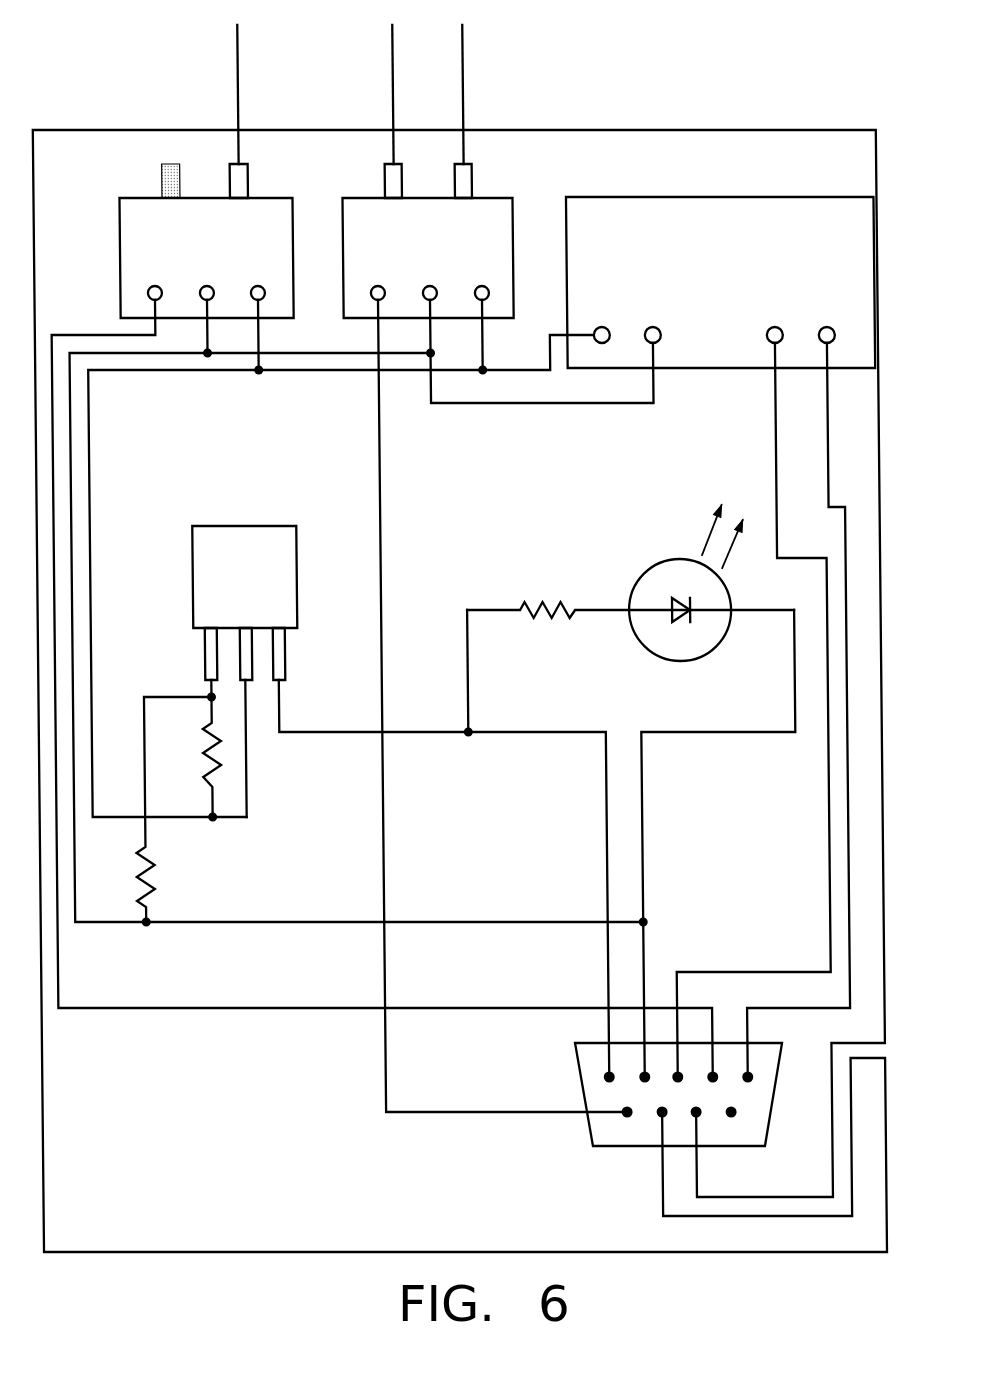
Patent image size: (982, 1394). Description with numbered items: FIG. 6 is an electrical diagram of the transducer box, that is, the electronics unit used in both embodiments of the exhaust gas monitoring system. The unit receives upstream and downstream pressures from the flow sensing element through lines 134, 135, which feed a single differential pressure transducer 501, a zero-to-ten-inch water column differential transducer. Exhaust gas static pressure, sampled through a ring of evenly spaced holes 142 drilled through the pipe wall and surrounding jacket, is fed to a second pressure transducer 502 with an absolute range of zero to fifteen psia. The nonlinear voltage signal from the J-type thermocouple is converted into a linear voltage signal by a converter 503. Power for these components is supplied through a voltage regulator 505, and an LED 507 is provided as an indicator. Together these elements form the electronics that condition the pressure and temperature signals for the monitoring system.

The holes 142 is at (237, 68).
The line 134 is at (392, 75).
The line 135 is at (467, 88).
The differential pressure transducer 501 is at (362, 198).
The pressure transducer 502 is at (138, 198).
The converter 503 is at (711, 197).
The voltage regulator 505 is at (242, 526).
The LED 507 is at (657, 567).